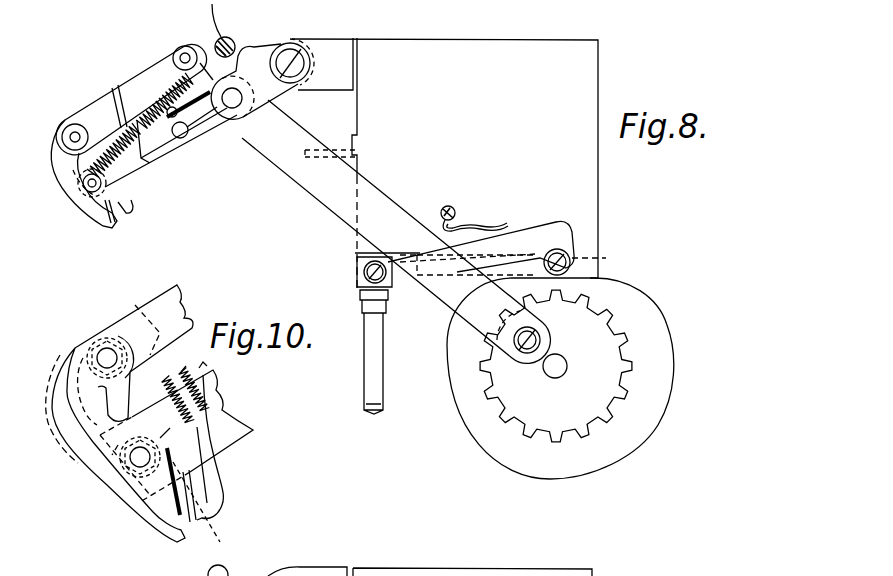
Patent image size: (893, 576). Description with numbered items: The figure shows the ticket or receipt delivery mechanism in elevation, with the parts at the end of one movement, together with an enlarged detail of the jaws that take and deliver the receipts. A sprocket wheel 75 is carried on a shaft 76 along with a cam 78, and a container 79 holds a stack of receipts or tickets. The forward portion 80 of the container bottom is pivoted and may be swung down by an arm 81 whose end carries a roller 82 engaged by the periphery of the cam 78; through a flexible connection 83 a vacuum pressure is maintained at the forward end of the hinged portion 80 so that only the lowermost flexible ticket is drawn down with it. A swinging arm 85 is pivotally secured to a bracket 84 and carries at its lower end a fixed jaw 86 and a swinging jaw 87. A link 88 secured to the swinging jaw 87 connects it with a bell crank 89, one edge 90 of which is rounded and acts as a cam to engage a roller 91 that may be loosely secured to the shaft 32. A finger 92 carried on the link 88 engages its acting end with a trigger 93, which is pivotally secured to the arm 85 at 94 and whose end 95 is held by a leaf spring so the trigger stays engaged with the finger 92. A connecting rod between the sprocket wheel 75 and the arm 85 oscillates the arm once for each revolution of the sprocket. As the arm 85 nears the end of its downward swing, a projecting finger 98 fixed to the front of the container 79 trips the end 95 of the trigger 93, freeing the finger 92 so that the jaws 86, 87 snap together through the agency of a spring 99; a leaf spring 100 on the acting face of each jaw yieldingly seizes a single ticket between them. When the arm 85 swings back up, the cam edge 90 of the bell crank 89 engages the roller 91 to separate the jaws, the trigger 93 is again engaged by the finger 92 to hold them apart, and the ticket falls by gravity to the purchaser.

In FIG. 8, the shaft 32 is at (208, 18).
In FIG. 10, the shaft 32 is at (230, 568).
In FIG. 8, the sprocket wheel 75 is at (556, 366).
In FIG. 8, the shaft 76 is at (567, 364).
In FIG. 8, the cam 78 is at (560, 378).
In FIG. 8, the container 79 is at (445, 165).
In FIG. 8, the forward portion of container bottom 80 is at (398, 288).
In FIG. 8, the arm 81 is at (544, 228).
In FIG. 8, the roller 82 is at (587, 257).
In FIG. 8, the flexible connection 83 is at (384, 397).
In FIG. 8, the bracket 84 is at (331, 40).
In FIG. 10, the bracket 84 is at (324, 575).
In FIG. 8, the swinging arm 85 is at (202, 139).
In FIG. 10, the swinging arm 85 is at (236, 433).
In FIG. 8, the fixed jaw 86 is at (135, 204).
In FIG. 10, the fixed jaw 86 is at (222, 492).
In FIG. 8, the swinging jaw 87 is at (62, 180).
In FIG. 10, the swinging jaw 87 is at (160, 510).
In FIG. 8, the link 88 is at (93, 116).
In FIG. 10, the link 88 is at (156, 303).
In FIG. 8, the bell crank 89 is at (188, 46).
In FIG. 8, the cam edge 90 is at (256, 50).
In FIG. 8, the roller 91 is at (229, 38).
In FIG. 8, the finger 92 is at (118, 100).
In FIG. 8, the trigger 93 is at (160, 150).
In FIG. 8, the pivot 94 is at (198, 147).
In FIG. 8, the trigger end 95 is at (214, 117).
In FIG. 8, the projecting finger 98 is at (322, 150).
In FIG. 8, the spring 99 is at (158, 78).
In FIG. 10, the spring 99 is at (182, 378).
In FIG. 8, the leaf spring 100 is at (113, 218).
In FIG. 10, the leaf spring 100 is at (208, 515).